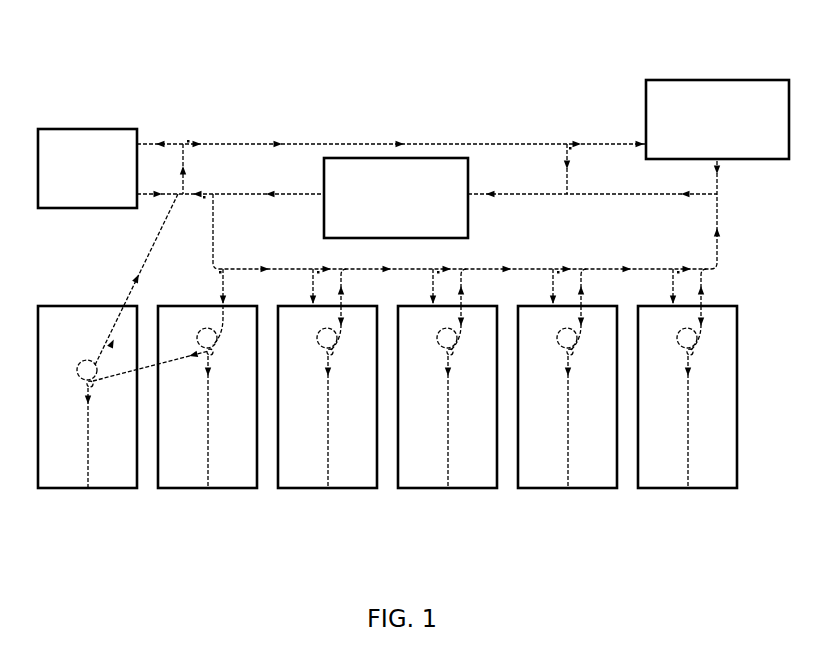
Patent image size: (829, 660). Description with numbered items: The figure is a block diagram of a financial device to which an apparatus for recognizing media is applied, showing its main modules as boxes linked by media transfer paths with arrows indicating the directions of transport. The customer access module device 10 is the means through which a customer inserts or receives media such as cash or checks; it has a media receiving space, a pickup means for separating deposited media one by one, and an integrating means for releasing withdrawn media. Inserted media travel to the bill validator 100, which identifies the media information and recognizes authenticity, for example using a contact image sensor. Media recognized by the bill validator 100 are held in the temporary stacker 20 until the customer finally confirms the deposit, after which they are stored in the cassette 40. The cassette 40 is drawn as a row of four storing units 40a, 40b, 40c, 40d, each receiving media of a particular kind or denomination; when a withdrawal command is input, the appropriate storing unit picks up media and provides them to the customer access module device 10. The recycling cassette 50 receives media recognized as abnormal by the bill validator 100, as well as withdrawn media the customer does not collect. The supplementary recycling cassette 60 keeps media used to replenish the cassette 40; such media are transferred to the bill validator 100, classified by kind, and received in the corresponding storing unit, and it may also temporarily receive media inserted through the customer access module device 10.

The customer access module device 10 is at (717, 80).
The temporary stacker 20 is at (87, 129).
The bill validator 100 is at (468, 218).
The supplementary recycling cassette 60 is at (117, 488).
The recycling cassette 50 is at (237, 488).
The cassette 40 is at (508, 418).
The storing unit 40a is at (357, 488).
The storing unit 40b is at (477, 488).
The storing unit 40c is at (597, 488).
The storing unit 40d is at (688, 398).